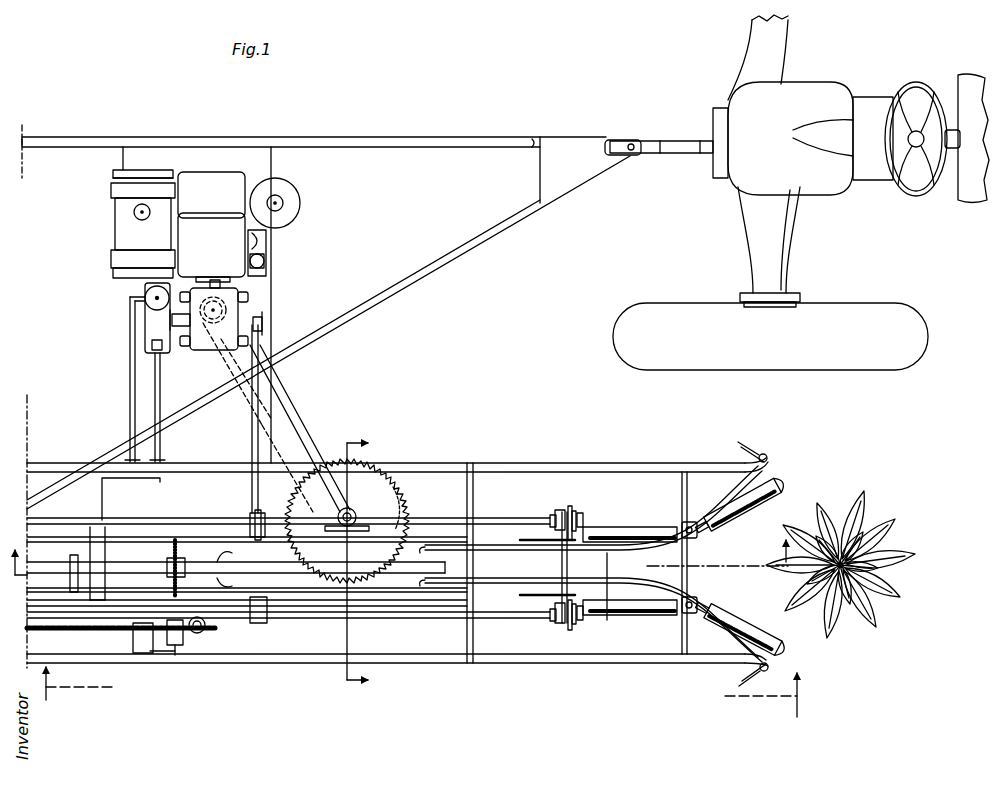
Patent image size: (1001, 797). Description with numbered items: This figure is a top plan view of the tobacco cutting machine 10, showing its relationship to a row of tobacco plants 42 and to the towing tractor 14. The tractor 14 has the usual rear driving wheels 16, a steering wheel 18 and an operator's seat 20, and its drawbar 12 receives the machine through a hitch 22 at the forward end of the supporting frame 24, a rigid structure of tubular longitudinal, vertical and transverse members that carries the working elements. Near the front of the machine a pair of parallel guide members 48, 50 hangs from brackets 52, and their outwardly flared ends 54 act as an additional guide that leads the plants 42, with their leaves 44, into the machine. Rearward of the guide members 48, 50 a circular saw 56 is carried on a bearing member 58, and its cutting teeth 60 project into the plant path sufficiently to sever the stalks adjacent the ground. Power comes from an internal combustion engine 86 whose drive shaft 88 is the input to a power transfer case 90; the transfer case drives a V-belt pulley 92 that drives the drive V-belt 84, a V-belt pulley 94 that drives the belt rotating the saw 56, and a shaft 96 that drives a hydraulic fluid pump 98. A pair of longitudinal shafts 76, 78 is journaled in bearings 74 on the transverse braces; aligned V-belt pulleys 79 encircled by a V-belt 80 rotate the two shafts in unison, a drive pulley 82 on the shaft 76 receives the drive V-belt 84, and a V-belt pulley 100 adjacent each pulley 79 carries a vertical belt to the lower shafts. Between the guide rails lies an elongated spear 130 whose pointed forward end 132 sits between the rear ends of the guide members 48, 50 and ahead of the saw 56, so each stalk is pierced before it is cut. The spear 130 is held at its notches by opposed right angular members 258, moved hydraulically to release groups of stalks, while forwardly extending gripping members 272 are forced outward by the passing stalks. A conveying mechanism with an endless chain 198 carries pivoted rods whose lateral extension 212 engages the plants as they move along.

The tobacco cutting machine 10 is at (441, 122).
The drawbar 12 is at (668, 144).
The tractor 14 is at (884, 86).
The rear driving wheels 16 is at (909, 325).
The steering wheel 18 is at (931, 188).
The operator's seat 20 is at (827, 186).
The hitch 22 is at (628, 140).
The supporting frame 24 is at (73, 134).
The tobacco plants 42 is at (881, 497).
The leaves 44 is at (872, 604).
The guide member 48 is at (604, 596).
The guide member 50 is at (528, 579).
The brackets 52 is at (626, 589).
The outwardly flared ends 54 is at (699, 593).
The circular saw 56 is at (399, 491).
The bearing member 58 is at (353, 514).
The cutting teeth 60 is at (412, 511).
The bearings 74 is at (249, 516).
The longitudinal shaft 76 is at (480, 522).
The longitudinal shaft 78 is at (494, 618).
The V-belt pulleys 79 is at (574, 516).
The V-belt 80 is at (561, 560).
The drive pulley 82 is at (255, 512).
The drive V-belt 84 is at (253, 415).
The internal combustion engine 86 is at (212, 222).
The drive shaft 88 is at (210, 283).
The power transfer case 90 is at (243, 313).
The V-belt pulley 92 is at (262, 323).
The V-belt pulley 94 is at (213, 328).
The shaft 96 is at (178, 318).
The hydraulic fluid pump 98 is at (158, 311).
The V-belt pulley 100 is at (555, 514).
The elongated spear 130 is at (120, 572).
The pointed forward end 132 is at (438, 568).
The endless chain 198 is at (108, 633).
The lateral extension 212 is at (73, 554).
The right angular members 258 is at (170, 557).
The gripping members 272 is at (222, 555).